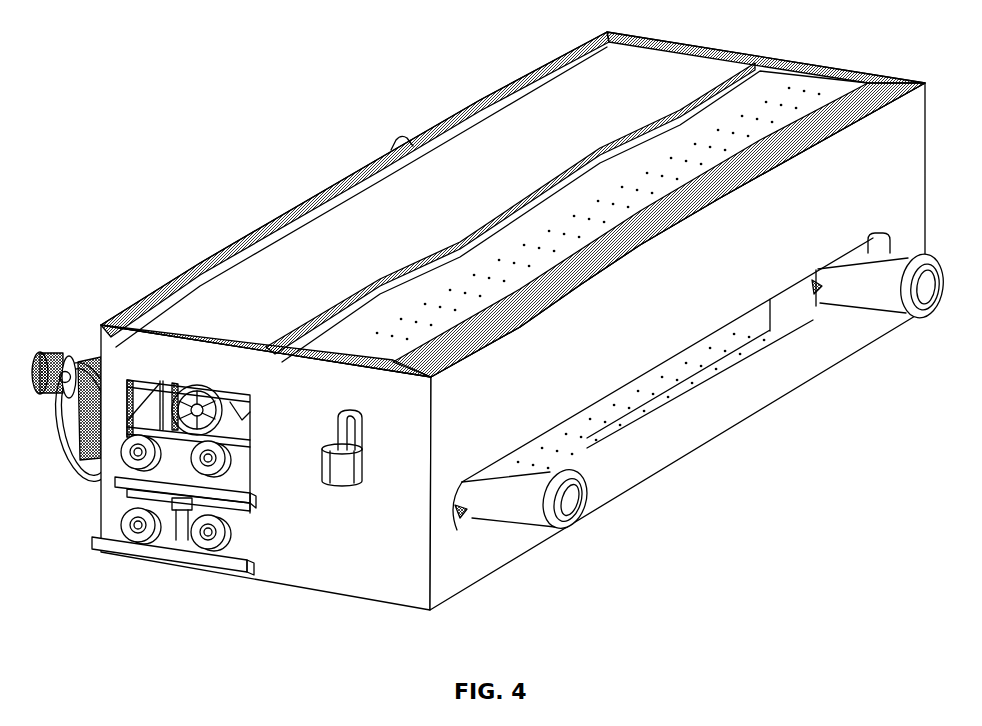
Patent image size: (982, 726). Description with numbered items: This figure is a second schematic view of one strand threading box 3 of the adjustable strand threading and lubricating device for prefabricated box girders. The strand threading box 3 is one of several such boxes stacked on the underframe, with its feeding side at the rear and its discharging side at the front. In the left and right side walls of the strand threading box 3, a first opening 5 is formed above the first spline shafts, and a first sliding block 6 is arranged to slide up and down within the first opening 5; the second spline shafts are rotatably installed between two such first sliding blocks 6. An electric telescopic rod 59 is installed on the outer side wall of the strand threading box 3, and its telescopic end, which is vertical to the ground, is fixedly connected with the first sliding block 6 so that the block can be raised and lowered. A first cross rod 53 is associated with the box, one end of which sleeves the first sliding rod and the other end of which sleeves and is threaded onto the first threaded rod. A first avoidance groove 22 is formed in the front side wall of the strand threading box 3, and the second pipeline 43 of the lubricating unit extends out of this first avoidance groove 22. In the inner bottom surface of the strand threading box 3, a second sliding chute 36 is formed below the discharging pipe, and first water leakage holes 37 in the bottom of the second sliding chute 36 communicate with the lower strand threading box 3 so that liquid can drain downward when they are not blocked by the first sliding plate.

The strand threading box 3 is at (330, 185).
The first opening 5 is at (147, 393).
The first sliding block 6 is at (168, 480).
The electric telescopic rod 59 is at (182, 527).
The first cross rod 53 is at (337, 472).
The first avoidance groove 22 is at (677, 390).
The second pipeline 43 is at (517, 505).
The second sliding chute 36 is at (758, 100).
The first water leakage hole 37 is at (823, 92).